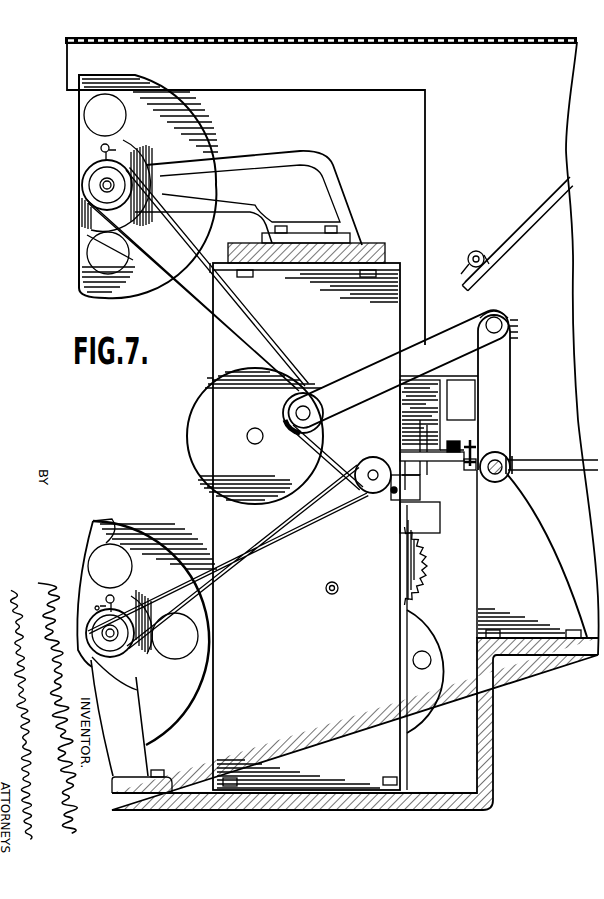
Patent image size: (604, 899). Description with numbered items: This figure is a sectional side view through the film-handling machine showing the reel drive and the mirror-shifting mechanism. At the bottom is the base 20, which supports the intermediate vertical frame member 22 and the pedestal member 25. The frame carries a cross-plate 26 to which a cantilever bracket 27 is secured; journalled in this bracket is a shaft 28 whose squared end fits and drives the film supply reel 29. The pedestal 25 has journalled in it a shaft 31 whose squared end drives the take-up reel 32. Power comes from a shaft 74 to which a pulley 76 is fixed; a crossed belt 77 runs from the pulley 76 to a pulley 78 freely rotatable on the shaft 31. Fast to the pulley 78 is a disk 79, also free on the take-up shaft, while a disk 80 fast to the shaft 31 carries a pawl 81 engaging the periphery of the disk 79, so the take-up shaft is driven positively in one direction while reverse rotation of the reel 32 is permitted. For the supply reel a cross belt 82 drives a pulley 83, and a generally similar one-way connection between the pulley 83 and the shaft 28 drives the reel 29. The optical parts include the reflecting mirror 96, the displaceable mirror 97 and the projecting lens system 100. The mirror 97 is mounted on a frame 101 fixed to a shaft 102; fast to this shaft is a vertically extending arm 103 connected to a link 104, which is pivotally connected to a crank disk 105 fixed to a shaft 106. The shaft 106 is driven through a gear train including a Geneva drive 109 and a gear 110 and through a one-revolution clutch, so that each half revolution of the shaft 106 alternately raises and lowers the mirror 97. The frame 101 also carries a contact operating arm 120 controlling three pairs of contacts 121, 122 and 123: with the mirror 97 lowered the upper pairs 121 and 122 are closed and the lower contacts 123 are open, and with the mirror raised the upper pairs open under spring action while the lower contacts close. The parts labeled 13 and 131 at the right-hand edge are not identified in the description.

The cover plate 13 is at (585, 231).
The base 20 is at (490, 723).
The intermediate vertical frame member 22 is at (226, 516).
The pedestal member 25 is at (132, 762).
The cross-plate 26 is at (363, 247).
The cantilever bracket 27 is at (315, 187).
The shaft 28 is at (112, 182).
The film supply reel 29 is at (183, 117).
The shaft 31 is at (112, 638).
The take-up reel 32 is at (203, 672).
The shaft 74 is at (375, 494).
The pulley 76 is at (362, 481).
The belt 77 is at (262, 548).
The pulley 78 is at (123, 627).
The disk 79 is at (122, 652).
The disk 80 is at (97, 600).
The pawl 81 is at (145, 588).
The cross belt 82 is at (253, 343).
The pulley 83 is at (97, 181).
The reflecting mirror 96 is at (528, 230).
The displaceable mirror 97 is at (548, 461).
The projecting lens system 100 is at (460, 370).
The frame 101 is at (572, 475).
The shaft 102 is at (513, 479).
The vertically extending arm 103 is at (495, 373).
The link 104 is at (352, 380).
The crank disk 105 is at (203, 445).
The shaft 106 is at (255, 444).
The Geneva drive 109 is at (427, 630).
The gear 110 is at (410, 576).
The contact operating arm 120 is at (469, 471).
The contacts 121 is at (452, 450).
The contacts 122 is at (477, 437).
The contacts 123 is at (445, 470).
The cover edge 131 is at (600, 348).